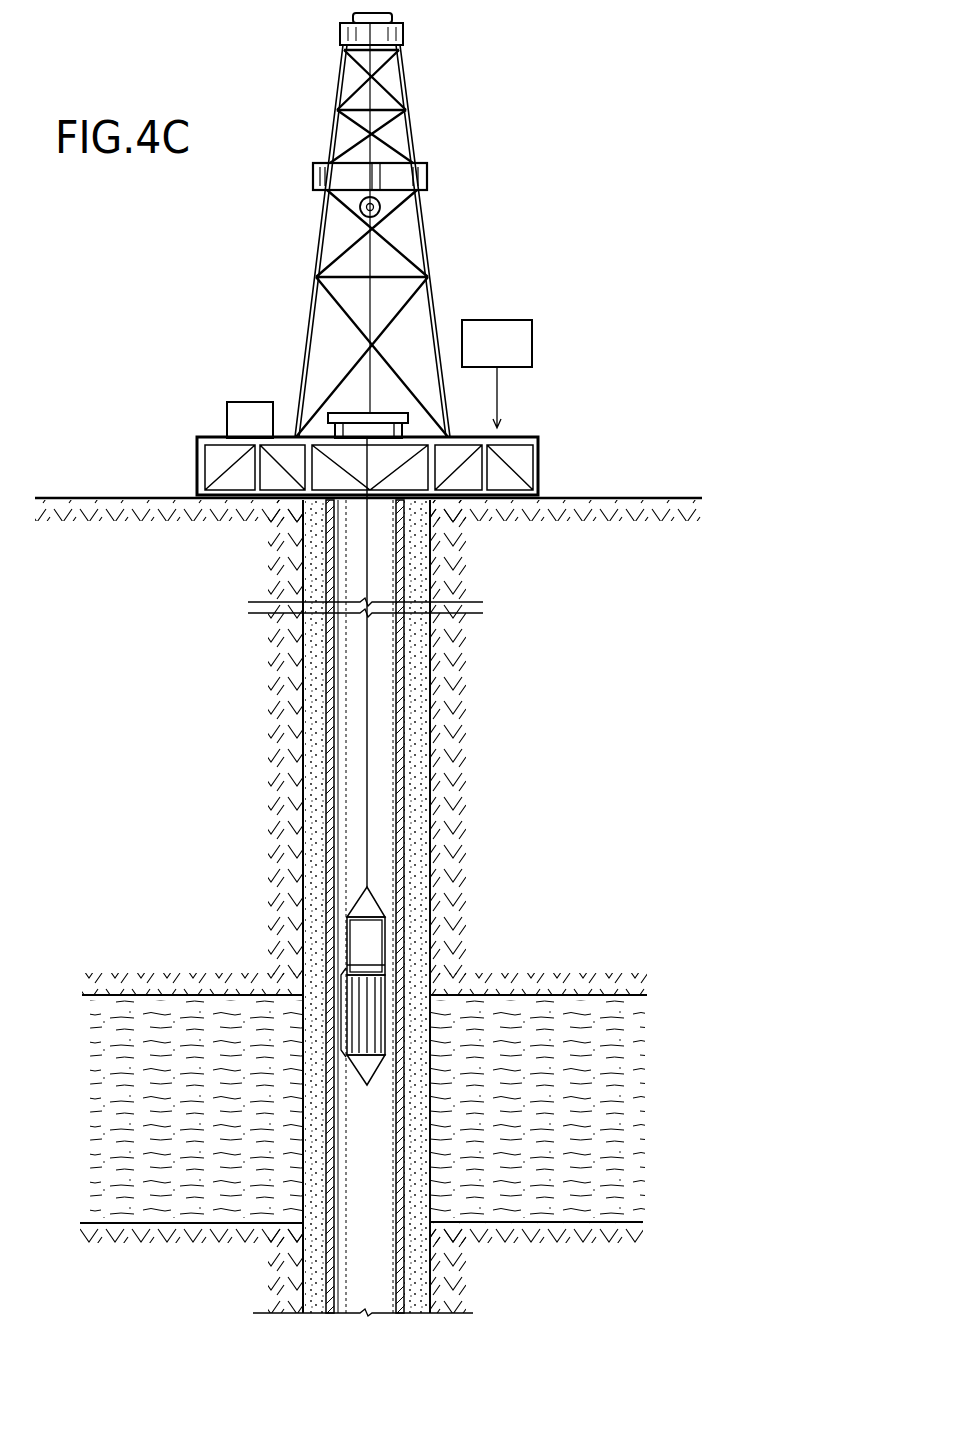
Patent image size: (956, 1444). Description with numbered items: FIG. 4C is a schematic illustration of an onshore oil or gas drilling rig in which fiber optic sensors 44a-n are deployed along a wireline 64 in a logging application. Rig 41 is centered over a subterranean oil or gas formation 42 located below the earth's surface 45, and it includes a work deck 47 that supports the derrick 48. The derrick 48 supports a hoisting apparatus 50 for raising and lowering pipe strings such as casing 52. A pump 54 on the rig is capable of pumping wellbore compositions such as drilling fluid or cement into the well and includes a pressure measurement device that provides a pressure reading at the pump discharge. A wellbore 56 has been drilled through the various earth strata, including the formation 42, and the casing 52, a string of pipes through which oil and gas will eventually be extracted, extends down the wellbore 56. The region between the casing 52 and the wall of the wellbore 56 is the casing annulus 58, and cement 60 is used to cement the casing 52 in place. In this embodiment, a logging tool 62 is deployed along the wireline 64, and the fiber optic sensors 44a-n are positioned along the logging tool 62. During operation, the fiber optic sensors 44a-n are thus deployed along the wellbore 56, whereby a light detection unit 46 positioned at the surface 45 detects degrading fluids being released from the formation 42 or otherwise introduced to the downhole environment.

The rig 41 is at (522, 437).
The subterranean oil or gas formation 42 is at (553, 1108).
The fiber optic sensors 44a-n is at (337, 1010).
The earth's surface 45 is at (620, 499).
The light detection unit 46 is at (533, 340).
The work deck 47 is at (198, 458).
The derrick 48 is at (407, 105).
The hoisting apparatus 50 is at (425, 196).
The casing 52 is at (303, 697).
The pump 54 is at (227, 422).
The wellbore 56 is at (442, 693).
The casing annulus 58 is at (328, 641).
The cement 60 is at (312, 872).
The logging tool 62 is at (383, 993).
The wireline 64 is at (365, 786).